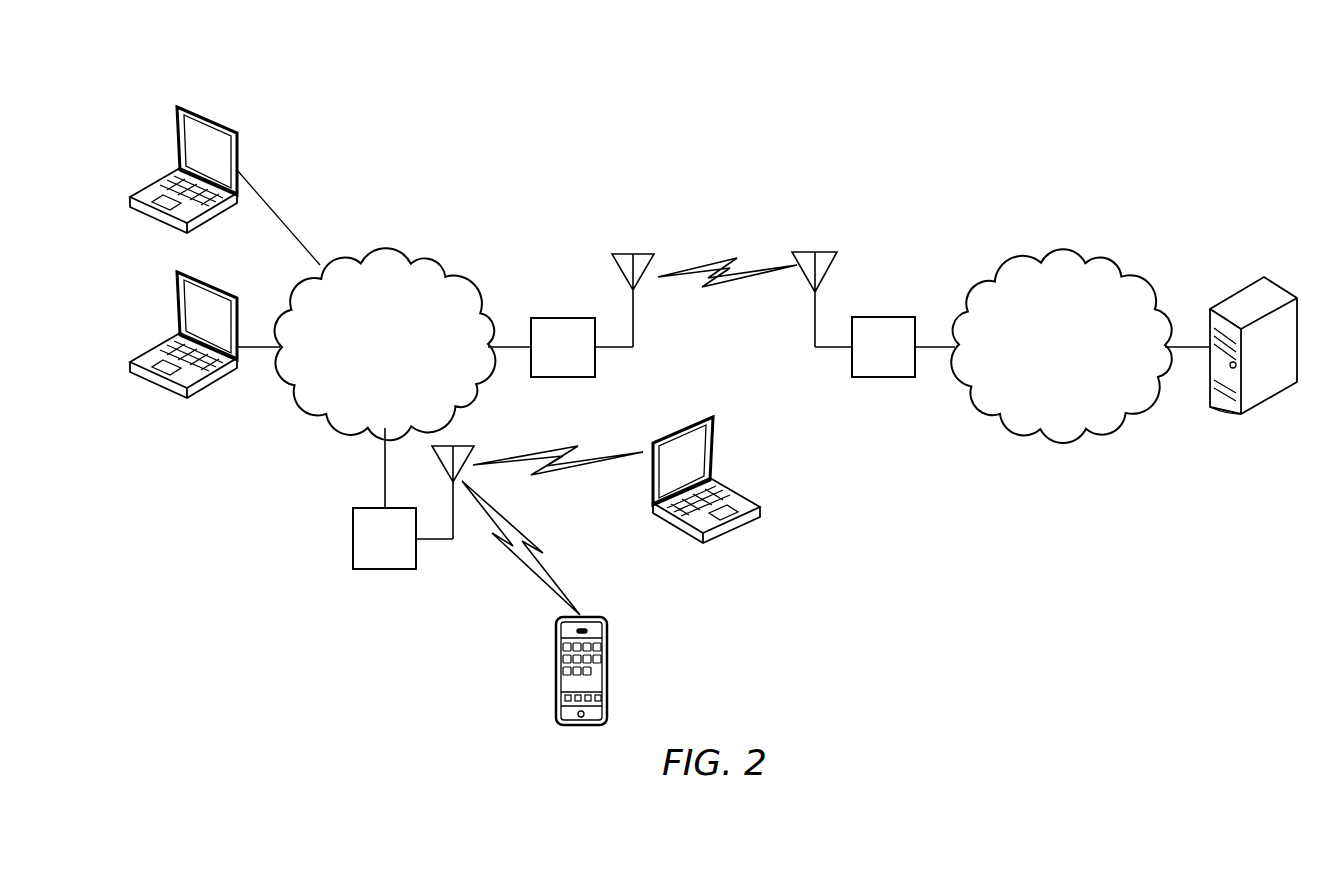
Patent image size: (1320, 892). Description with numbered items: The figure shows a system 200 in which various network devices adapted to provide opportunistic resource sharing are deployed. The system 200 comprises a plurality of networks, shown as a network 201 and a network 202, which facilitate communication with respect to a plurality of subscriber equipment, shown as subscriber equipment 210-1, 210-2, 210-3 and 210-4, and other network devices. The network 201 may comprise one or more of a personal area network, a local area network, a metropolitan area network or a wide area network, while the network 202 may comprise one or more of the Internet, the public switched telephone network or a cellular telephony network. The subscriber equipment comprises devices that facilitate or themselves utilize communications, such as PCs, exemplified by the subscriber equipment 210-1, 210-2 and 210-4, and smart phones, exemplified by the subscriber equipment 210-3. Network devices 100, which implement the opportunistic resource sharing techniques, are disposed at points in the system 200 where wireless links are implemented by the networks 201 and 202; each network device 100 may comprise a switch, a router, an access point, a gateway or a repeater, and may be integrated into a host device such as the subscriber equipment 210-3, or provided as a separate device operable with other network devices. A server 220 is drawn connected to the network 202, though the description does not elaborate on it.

The system 200 is at (1148, 158).
The network 201 is at (385, 344).
The network 202 is at (1061, 346).
The network device 100 is at (654, 433).
The subscriber equipment 210-1 is at (177, 135).
The subscriber equipment 210-2 is at (177, 313).
The subscriber equipment 210-3 is at (609, 669).
The subscriber equipment 210-4 is at (714, 466).
The server 220 is at (1250, 282).